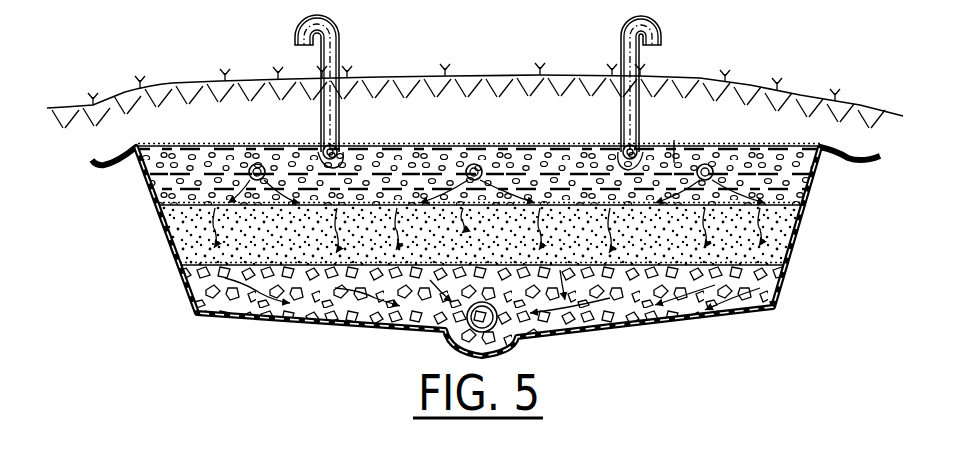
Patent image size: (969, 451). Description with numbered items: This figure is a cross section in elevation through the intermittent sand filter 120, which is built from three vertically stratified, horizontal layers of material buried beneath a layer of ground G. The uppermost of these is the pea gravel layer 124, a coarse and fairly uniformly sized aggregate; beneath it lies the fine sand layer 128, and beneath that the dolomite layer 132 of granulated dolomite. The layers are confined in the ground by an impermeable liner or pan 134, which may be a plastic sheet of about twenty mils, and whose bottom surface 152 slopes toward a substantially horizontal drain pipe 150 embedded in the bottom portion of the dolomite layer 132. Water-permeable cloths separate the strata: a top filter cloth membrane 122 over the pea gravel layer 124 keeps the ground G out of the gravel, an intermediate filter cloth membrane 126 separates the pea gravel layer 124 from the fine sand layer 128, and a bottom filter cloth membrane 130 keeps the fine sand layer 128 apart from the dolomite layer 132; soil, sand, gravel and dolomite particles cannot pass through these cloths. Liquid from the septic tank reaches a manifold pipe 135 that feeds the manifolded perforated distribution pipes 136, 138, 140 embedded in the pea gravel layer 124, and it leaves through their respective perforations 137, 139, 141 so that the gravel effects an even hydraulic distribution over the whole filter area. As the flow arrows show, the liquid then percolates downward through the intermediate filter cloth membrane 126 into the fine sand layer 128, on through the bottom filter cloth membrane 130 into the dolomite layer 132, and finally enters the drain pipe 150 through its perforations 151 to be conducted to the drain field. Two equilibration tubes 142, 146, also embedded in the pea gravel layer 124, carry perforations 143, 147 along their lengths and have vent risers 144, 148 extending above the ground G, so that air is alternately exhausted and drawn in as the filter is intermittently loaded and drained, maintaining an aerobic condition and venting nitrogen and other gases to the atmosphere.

The ground G is at (170, 80).
The intermittent sand filter 120 is at (521, 144).
The top filter cloth membrane 122 is at (290, 145).
The pea gravel layer 124 is at (172, 172).
The intermediate filter cloth membrane 126 is at (170, 215).
The fine sand layer 128 is at (203, 248).
The bottom filter cloth membrane 130 is at (213, 277).
The dolomite layer 132 is at (222, 297).
The liner side wall 134 is at (167, 233).
The manifold pipe 135 is at (674, 132).
The perforated distribution pipe 136 is at (468, 170).
The perforations 137 is at (486, 165).
The perforated distribution pipe 138 is at (712, 166).
The perforations 139 is at (812, 180).
The perforated distribution pipe 140 is at (247, 168).
The perforations 141 is at (140, 146).
The equilibration tube 142 is at (622, 168).
The perforations 143 is at (628, 170).
The vent riser 144 is at (621, 57).
The equilibration tube 146 is at (334, 168).
The perforations 147 is at (336, 168).
The vent riser 148 is at (339, 53).
The drain pipe 150 is at (520, 337).
The perforations 151 is at (562, 333).
The bottom surface 152 is at (397, 333).